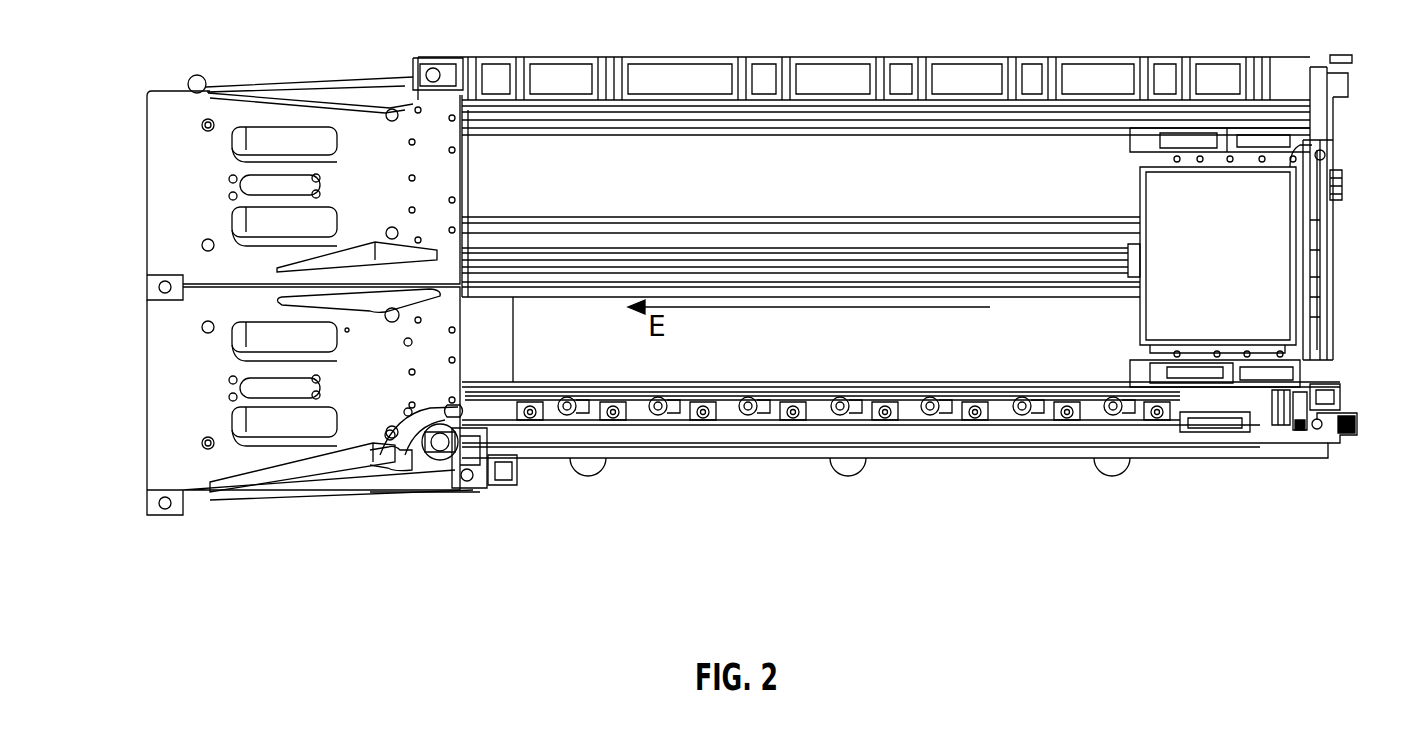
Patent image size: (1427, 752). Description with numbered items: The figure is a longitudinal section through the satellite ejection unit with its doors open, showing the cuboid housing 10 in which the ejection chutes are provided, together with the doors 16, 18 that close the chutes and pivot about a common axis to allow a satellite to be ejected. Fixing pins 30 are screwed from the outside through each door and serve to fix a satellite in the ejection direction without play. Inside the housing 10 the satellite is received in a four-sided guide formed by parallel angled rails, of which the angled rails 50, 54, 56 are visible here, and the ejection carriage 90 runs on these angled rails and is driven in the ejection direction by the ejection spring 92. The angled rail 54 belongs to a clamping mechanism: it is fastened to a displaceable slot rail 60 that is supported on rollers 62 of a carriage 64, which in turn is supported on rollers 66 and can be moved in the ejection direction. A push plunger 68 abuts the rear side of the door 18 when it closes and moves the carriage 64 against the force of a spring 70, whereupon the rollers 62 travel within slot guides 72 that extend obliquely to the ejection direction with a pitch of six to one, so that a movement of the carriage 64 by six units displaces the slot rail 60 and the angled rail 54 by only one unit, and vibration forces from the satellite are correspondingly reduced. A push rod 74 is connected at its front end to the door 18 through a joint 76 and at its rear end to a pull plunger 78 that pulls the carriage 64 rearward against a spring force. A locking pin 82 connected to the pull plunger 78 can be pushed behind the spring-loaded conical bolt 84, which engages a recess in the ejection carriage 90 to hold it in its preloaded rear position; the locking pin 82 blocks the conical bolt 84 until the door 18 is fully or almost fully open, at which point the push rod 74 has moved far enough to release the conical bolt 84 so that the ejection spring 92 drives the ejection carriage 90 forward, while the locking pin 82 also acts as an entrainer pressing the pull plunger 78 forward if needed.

The housing 10 is at (1328, 115).
The door 16 is at (175, 185).
The door 18 is at (175, 375).
The fixing pin 30 is at (205, 125).
The angled rail 50 is at (980, 120).
The angled rail 54 is at (745, 390).
The angled rail 56 is at (752, 258).
The slot rail 60 is at (735, 400).
The rollers 62 is at (752, 412).
The carriage 64 is at (818, 415).
The rollers 66 is at (898, 420).
The push plunger 68 is at (382, 455).
The spring 70 is at (472, 488).
The slot guides 72 is at (585, 420).
The push rod 74 is at (1076, 420).
The joint 76 is at (445, 462).
The pull plunger 78 is at (1213, 428).
The locking pin 82 is at (1288, 422).
The conical bolt 84 is at (1322, 405).
The ejection carriage 90 is at (1300, 378).
The ejection spring 92 is at (1325, 153).